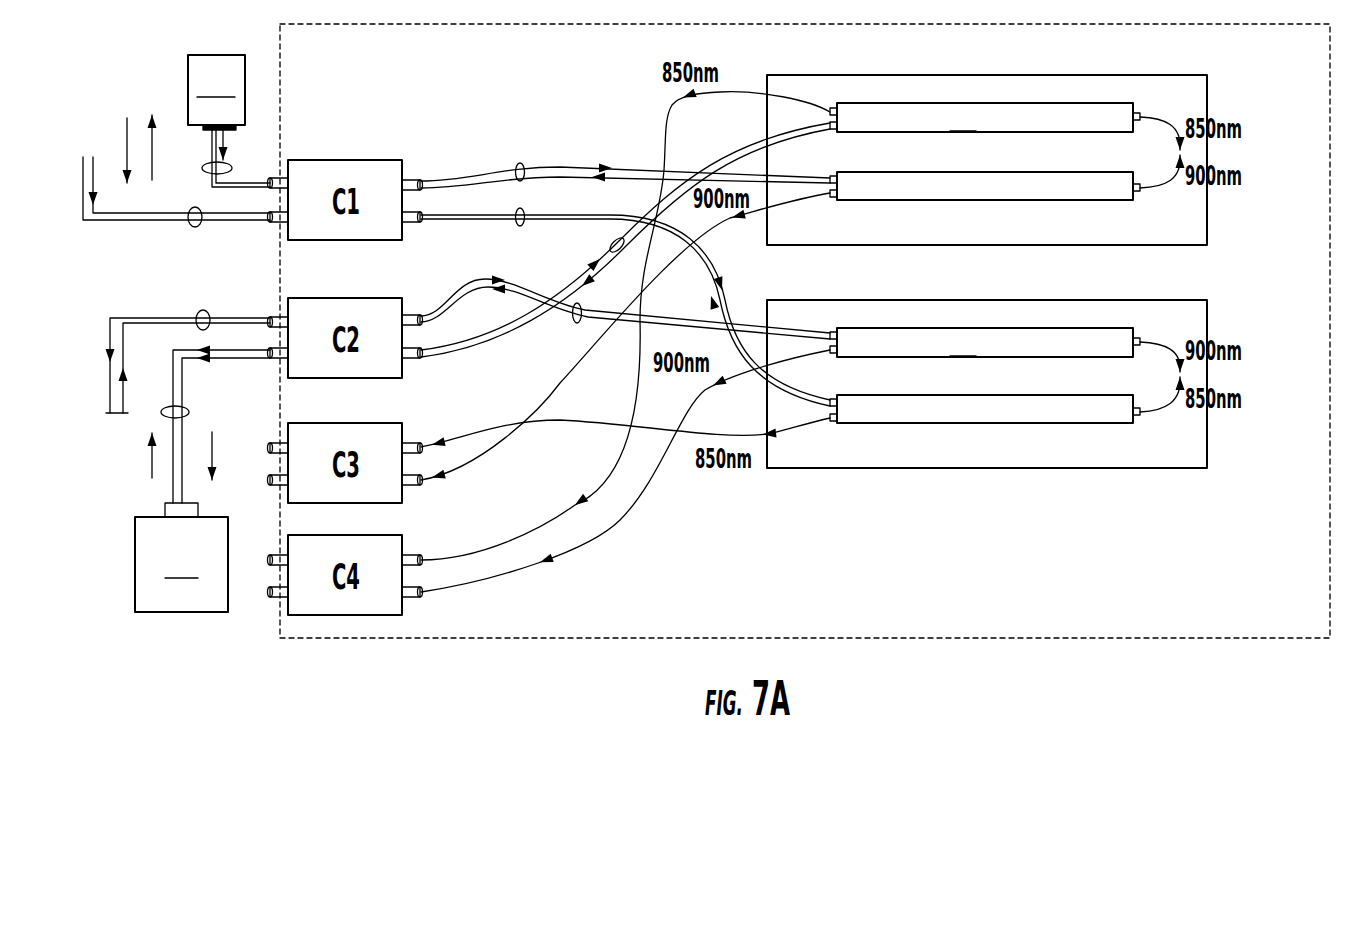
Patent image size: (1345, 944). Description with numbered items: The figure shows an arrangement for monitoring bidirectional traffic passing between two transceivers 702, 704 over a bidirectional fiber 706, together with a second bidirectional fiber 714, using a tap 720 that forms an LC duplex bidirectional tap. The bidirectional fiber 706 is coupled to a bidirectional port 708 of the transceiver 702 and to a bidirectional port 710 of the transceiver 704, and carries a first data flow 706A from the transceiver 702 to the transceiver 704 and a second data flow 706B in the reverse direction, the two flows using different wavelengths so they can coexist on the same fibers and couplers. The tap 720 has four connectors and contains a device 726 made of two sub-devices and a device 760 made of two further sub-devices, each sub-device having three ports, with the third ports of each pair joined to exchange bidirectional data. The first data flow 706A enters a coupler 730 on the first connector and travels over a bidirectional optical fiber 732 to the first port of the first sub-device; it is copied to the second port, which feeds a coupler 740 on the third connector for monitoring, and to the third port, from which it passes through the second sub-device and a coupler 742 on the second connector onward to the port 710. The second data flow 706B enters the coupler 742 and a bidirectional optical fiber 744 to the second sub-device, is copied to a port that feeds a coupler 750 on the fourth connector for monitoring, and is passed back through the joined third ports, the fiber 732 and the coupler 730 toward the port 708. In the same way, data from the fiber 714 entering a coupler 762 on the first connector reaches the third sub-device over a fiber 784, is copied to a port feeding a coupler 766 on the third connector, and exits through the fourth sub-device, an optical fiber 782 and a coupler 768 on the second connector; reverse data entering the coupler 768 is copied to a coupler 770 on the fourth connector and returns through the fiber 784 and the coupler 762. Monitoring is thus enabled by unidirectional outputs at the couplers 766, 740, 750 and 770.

The transceiver 702 is at (216, 92).
The transceiver 704 is at (181, 564).
The bidirectional fiber 706 is at (203, 169).
The first data flow 706A is at (125, 137).
The second data flow 706B is at (156, 140).
The bidirectional port 708 is at (230, 130).
The bidirectional port 710 is at (200, 508).
The bidirectional fiber 714 is at (196, 228).
The tap 720 is at (1248, 639).
The device 726 is at (1020, 75).
The coupler 730 is at (413, 178).
The bidirectional optical fiber 732 is at (521, 162).
The coupler 740 is at (414, 485).
The coupler 742 is at (414, 360).
The bidirectional optical fiber 744 is at (612, 244).
The coupler 750 is at (414, 553).
The device 760 is at (1020, 300).
The coupler 762 is at (410, 225).
The coupler 766 is at (413, 443).
The coupler 768 is at (414, 313).
The coupler 770 is at (414, 598).
The optical fiber 782 is at (575, 323).
The fiber 784 is at (522, 226).